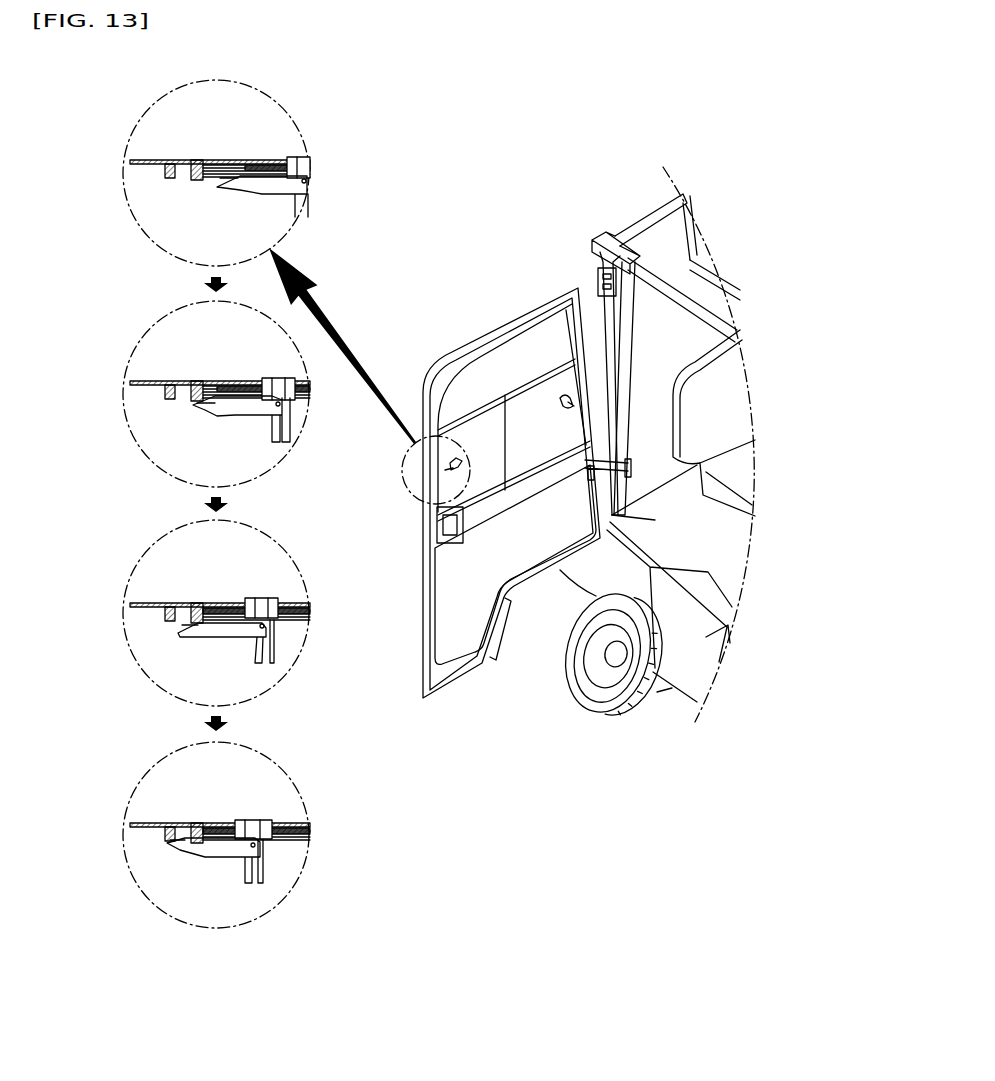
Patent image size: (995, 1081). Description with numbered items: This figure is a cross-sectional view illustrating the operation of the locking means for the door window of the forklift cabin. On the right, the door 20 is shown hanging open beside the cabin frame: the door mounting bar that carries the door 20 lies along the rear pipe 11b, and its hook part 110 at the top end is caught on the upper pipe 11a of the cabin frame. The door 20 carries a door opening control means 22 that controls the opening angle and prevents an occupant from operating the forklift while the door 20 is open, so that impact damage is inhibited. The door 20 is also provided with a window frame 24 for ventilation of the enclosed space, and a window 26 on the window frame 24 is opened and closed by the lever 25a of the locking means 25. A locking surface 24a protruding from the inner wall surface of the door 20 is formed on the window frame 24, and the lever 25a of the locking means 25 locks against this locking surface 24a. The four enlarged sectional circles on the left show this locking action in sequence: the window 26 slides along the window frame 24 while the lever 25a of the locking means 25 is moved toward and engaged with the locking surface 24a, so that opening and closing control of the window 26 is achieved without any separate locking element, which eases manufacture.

The door 20 is at (150, 162).
The door opening control means 22 is at (565, 400).
The window frame 24 is at (198, 180).
The locking surface 24a is at (188, 173).
The locking means 25 is at (290, 425).
The lever 25a is at (227, 168).
The window 26 is at (272, 163).
The hook part 110 is at (628, 240).
The upper pipe 11a is at (710, 293).
The rear pipe 11b is at (623, 320).